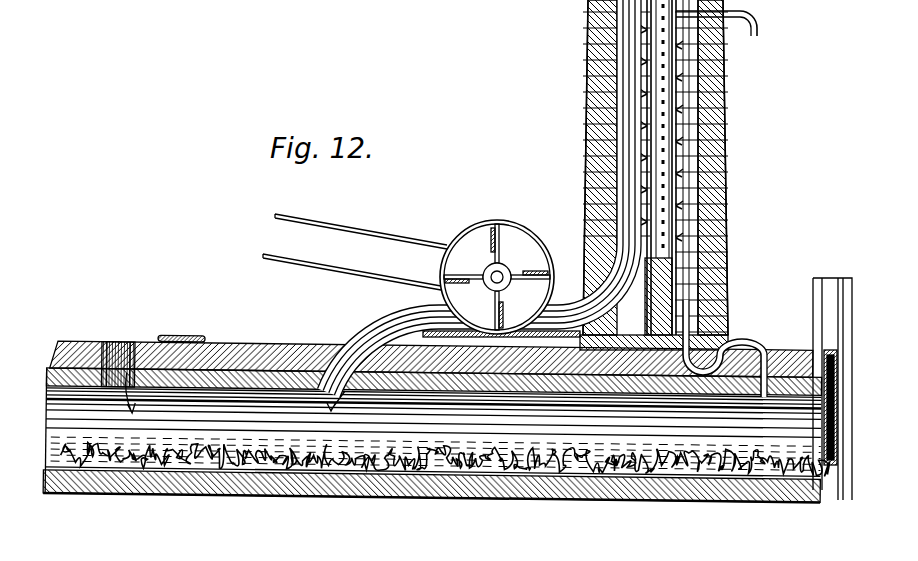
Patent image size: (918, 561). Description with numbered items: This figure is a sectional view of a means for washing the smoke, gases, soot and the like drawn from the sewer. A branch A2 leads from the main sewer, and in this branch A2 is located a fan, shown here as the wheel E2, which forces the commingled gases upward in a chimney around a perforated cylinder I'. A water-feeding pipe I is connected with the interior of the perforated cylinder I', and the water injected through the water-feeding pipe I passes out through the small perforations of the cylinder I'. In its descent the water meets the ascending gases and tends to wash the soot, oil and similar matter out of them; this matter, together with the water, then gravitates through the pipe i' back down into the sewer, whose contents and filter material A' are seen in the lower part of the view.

The water-feeding pipe I is at (720, 18).
The perforated cylinder I' is at (722, 167).
The wheel E2 is at (497, 277).
The branch from the main sewer A2 is at (479, 205).
The filter material A' is at (444, 447).
The siphon pipe i' is at (728, 348).